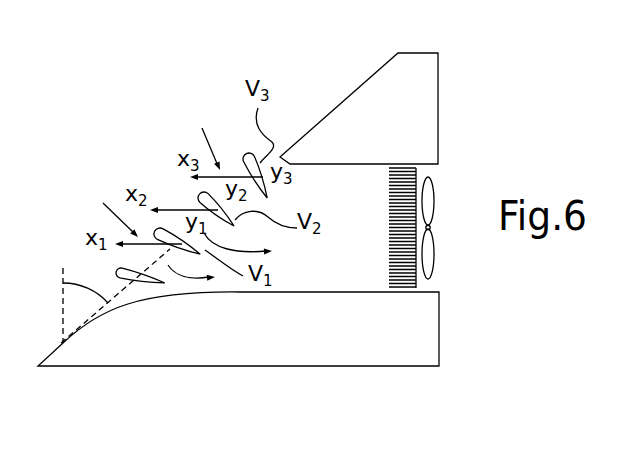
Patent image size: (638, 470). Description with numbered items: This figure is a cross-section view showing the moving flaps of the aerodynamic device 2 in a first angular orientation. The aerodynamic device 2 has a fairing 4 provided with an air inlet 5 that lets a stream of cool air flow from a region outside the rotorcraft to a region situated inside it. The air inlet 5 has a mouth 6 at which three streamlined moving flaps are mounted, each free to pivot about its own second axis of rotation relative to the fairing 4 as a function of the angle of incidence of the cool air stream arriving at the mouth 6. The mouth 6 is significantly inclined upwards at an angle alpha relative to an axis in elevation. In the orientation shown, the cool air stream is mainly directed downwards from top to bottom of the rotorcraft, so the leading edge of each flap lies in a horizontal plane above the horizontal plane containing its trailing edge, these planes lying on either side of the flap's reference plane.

The aerodynamic device 2 is at (171, 146).
The fairing 4 is at (343, 117).
The air inlet 5 is at (332, 265).
The mouth 6 is at (172, 193).